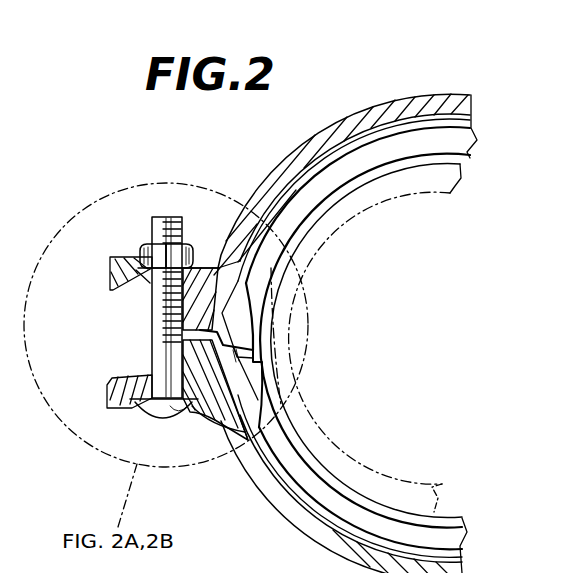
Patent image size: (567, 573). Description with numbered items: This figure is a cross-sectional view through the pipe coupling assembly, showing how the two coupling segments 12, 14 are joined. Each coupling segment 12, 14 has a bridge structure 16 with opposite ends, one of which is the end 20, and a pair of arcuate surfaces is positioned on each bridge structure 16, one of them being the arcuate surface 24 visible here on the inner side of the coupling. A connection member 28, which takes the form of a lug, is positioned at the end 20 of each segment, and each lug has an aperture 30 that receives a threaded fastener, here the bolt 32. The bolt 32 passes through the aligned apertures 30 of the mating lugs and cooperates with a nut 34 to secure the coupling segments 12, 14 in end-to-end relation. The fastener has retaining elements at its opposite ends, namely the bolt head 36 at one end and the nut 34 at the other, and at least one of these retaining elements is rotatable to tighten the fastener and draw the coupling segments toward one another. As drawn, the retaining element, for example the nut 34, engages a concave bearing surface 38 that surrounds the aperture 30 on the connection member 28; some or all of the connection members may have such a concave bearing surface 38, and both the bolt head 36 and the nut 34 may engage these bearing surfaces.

The coupling segment 12 is at (359, 114).
The coupling segment 14 is at (333, 549).
The bridge structure 16 is at (447, 96).
The end 20 is at (228, 226).
The arcuate surface 24 is at (300, 234).
The connection member 28 is at (111, 264).
The aperture 30 is at (153, 277).
The bolt 32 is at (158, 320).
The nut 34 is at (134, 250).
The bolt head 36 is at (168, 418).
The concave bearing surface 38 is at (200, 266).